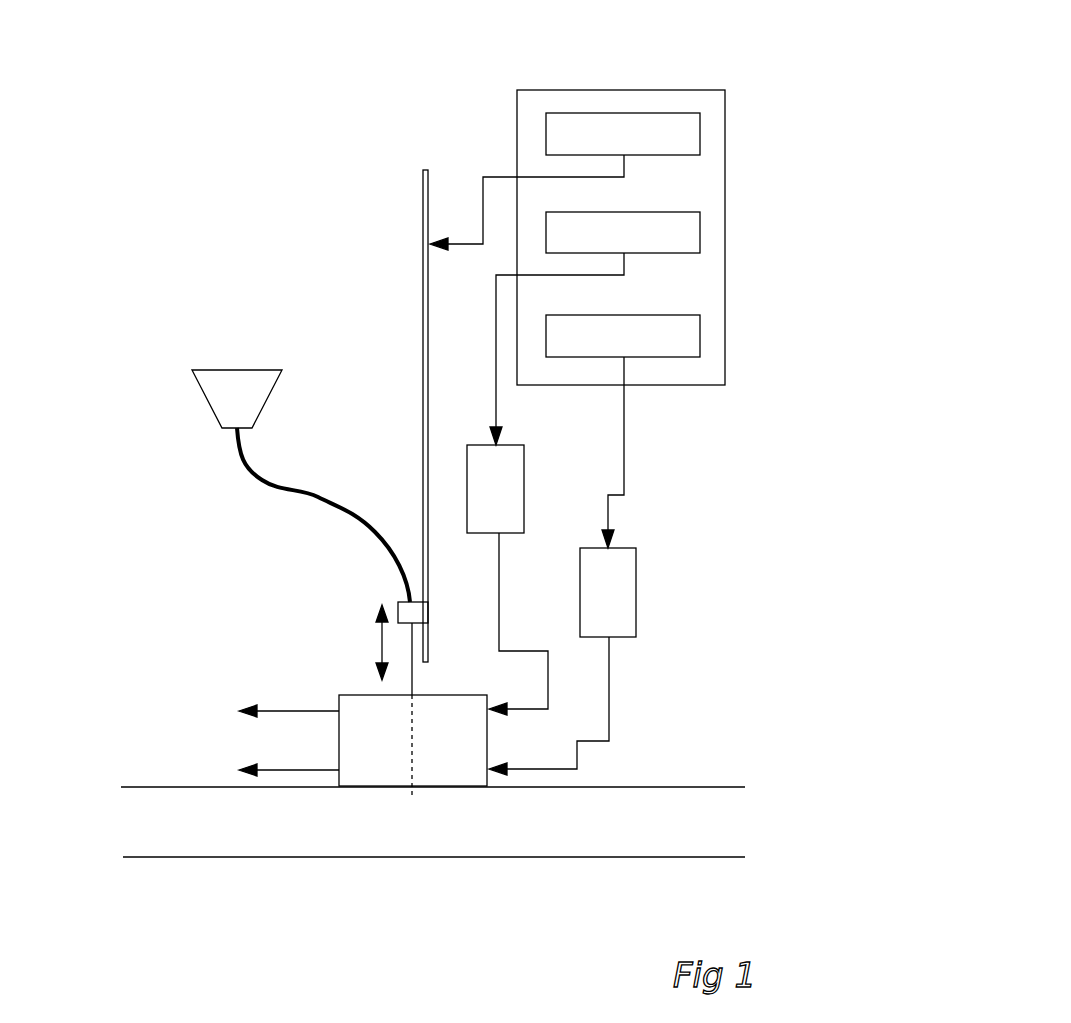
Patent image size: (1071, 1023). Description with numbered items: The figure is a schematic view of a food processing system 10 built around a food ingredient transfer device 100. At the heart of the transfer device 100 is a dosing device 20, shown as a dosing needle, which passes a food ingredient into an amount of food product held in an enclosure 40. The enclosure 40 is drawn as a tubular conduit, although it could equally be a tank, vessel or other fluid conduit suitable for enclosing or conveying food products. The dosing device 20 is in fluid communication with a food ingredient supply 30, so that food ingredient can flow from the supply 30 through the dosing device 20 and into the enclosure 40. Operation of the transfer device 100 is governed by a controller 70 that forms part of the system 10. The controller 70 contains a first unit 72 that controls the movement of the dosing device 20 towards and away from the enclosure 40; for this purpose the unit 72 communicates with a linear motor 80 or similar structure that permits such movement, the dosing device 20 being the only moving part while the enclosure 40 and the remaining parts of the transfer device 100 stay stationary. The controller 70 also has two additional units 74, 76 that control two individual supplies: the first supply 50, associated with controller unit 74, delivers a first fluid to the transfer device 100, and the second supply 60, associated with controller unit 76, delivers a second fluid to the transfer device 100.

The food processing system 10 is at (268, 548).
The dosing device 20 is at (410, 792).
The food ingredient supply 30 is at (252, 368).
The enclosure 40 is at (205, 833).
The first supply 50 is at (524, 500).
The second supply 60 is at (636, 598).
The controller 70 is at (595, 90).
The first unit 72 is at (701, 135).
The controller unit 74 is at (701, 238).
The controller unit 76 is at (677, 357).
The linear motor 80 is at (420, 200).
The food ingredient transfer device 100 is at (357, 695).